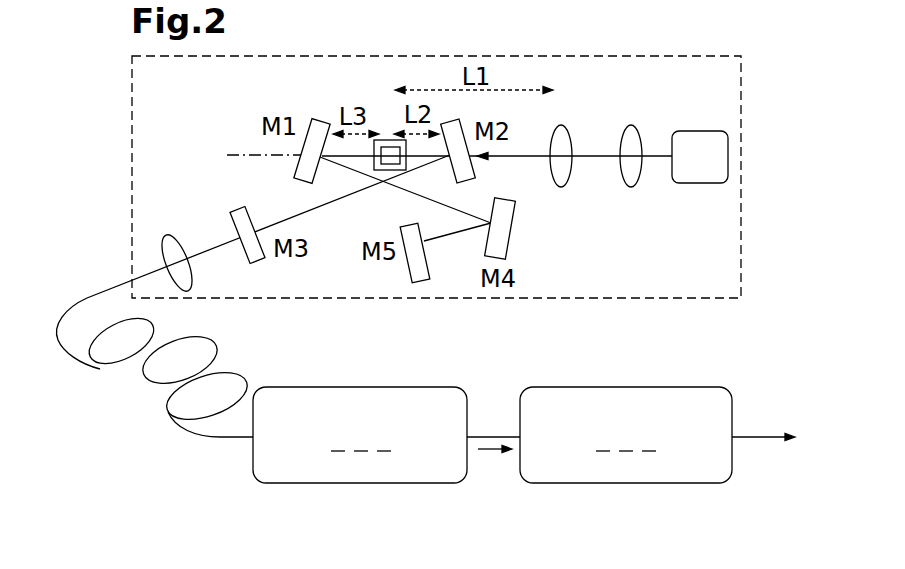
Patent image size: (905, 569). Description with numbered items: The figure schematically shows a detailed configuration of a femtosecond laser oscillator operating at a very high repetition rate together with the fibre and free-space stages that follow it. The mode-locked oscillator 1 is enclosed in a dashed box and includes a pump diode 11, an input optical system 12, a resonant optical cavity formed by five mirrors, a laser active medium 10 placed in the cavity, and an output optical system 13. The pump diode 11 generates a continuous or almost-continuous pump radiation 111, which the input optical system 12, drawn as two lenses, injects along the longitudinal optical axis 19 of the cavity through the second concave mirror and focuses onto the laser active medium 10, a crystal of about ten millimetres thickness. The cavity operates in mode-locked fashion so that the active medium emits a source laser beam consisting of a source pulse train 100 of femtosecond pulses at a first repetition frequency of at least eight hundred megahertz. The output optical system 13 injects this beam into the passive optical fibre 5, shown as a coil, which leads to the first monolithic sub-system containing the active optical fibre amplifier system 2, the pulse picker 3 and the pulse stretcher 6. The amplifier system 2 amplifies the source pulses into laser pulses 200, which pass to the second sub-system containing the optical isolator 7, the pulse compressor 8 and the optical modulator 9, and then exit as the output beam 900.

The mode-locked oscillator 1 is at (741, 255).
The active optical fibre amplifier system 2 is at (360, 435).
The pulse picker 3 is at (360, 435).
The passive optical fibre 5 is at (140, 397).
The pulse stretcher 6 is at (360, 435).
The optical isolator 7 is at (626, 435).
The pulse compressor 8 is at (626, 435).
The optical modulator 9 is at (626, 435).
The laser active medium 10 is at (387, 140).
The pump diode 11 is at (687, 169).
The input optical system 12 is at (561, 187).
The output optical system 13 is at (176, 232).
The longitudinal optical axis 19 is at (243, 155).
The source pulse train 100 is at (85, 296).
The pump radiation 111 is at (533, 156).
The laser pulses 200 is at (483, 452).
The output laser beam 900 is at (757, 432).